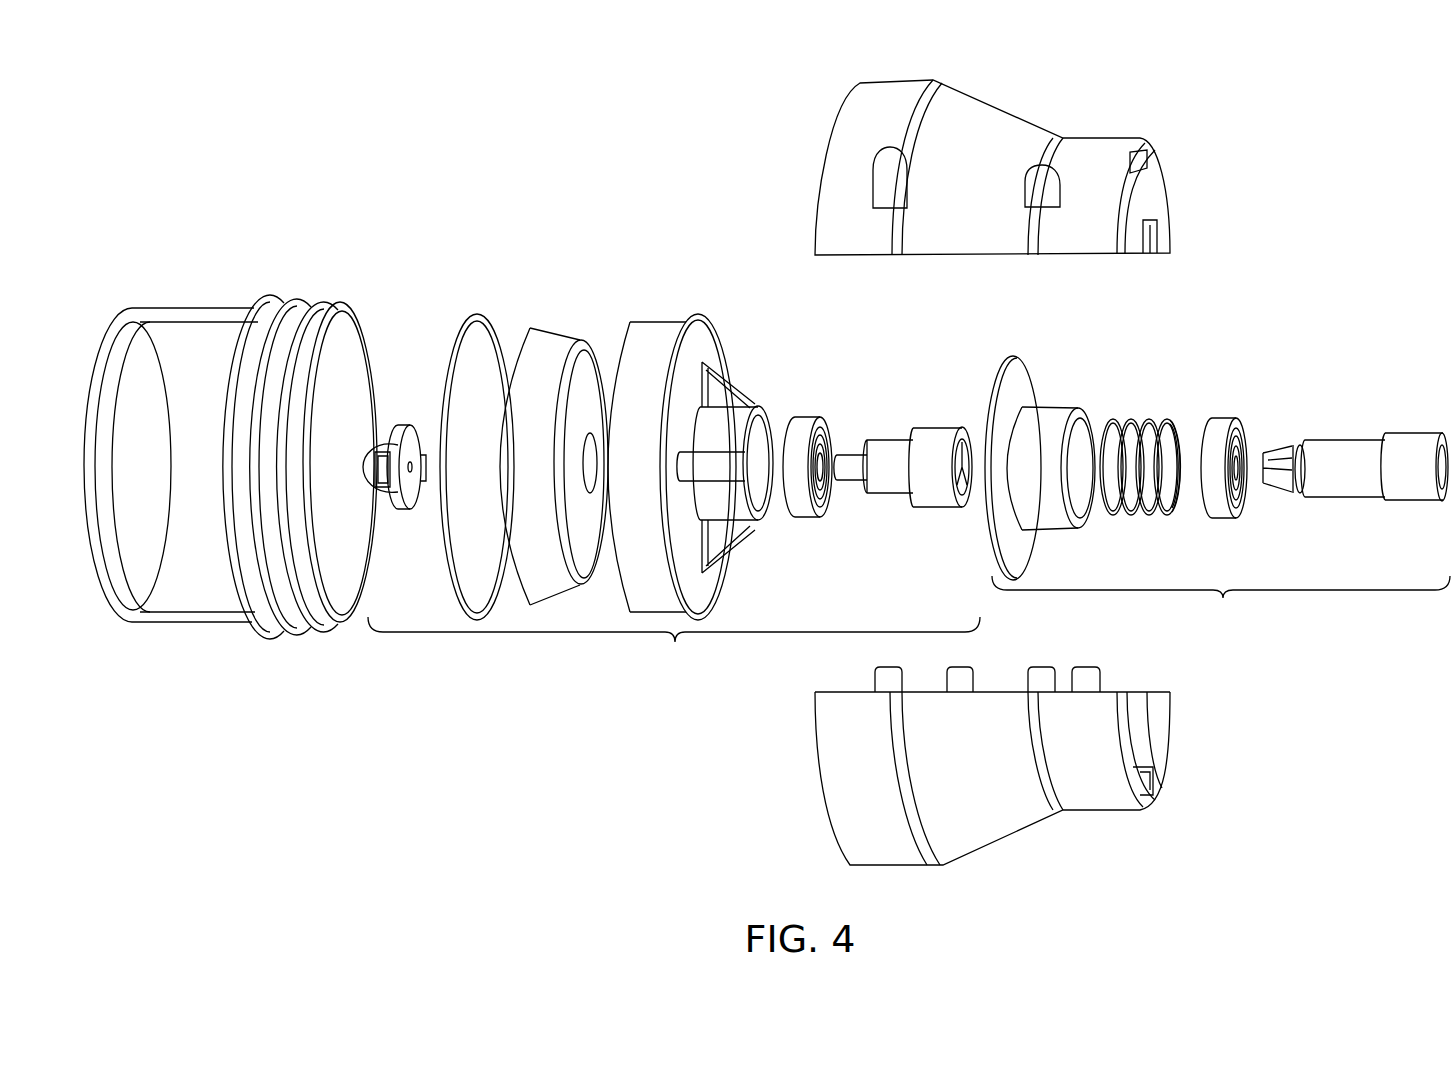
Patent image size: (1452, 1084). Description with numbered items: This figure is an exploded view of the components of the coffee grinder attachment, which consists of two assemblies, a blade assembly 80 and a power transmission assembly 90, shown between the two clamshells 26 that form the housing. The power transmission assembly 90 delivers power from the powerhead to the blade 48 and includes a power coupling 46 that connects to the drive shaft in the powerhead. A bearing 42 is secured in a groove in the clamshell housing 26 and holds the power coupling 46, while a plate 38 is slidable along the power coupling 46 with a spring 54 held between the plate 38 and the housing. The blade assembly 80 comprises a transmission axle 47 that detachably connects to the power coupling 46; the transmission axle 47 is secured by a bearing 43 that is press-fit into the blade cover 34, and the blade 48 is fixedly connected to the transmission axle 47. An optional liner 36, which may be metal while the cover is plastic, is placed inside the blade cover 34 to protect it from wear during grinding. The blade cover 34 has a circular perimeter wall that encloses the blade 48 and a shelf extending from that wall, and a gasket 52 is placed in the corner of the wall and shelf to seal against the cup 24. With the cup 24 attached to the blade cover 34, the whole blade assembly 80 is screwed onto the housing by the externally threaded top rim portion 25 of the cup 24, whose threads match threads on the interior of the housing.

The cup 24 is at (198, 332).
The top rim portion 25 is at (320, 625).
The clamshell housing 26 is at (997, 122).
The blade cover 34 is at (660, 328).
The liner 36 is at (555, 345).
The plate 38 is at (1052, 428).
The bearing 42 is at (1220, 428).
The bearing 43 is at (805, 423).
The power coupling 46 is at (1345, 452).
The transmission axle 47 is at (893, 450).
The blade 48 is at (398, 432).
The gasket 52 is at (480, 315).
The spring 54 is at (1150, 420).
The blade assembly 80 is at (674, 649).
The power transmission assembly 90 is at (1221, 607).